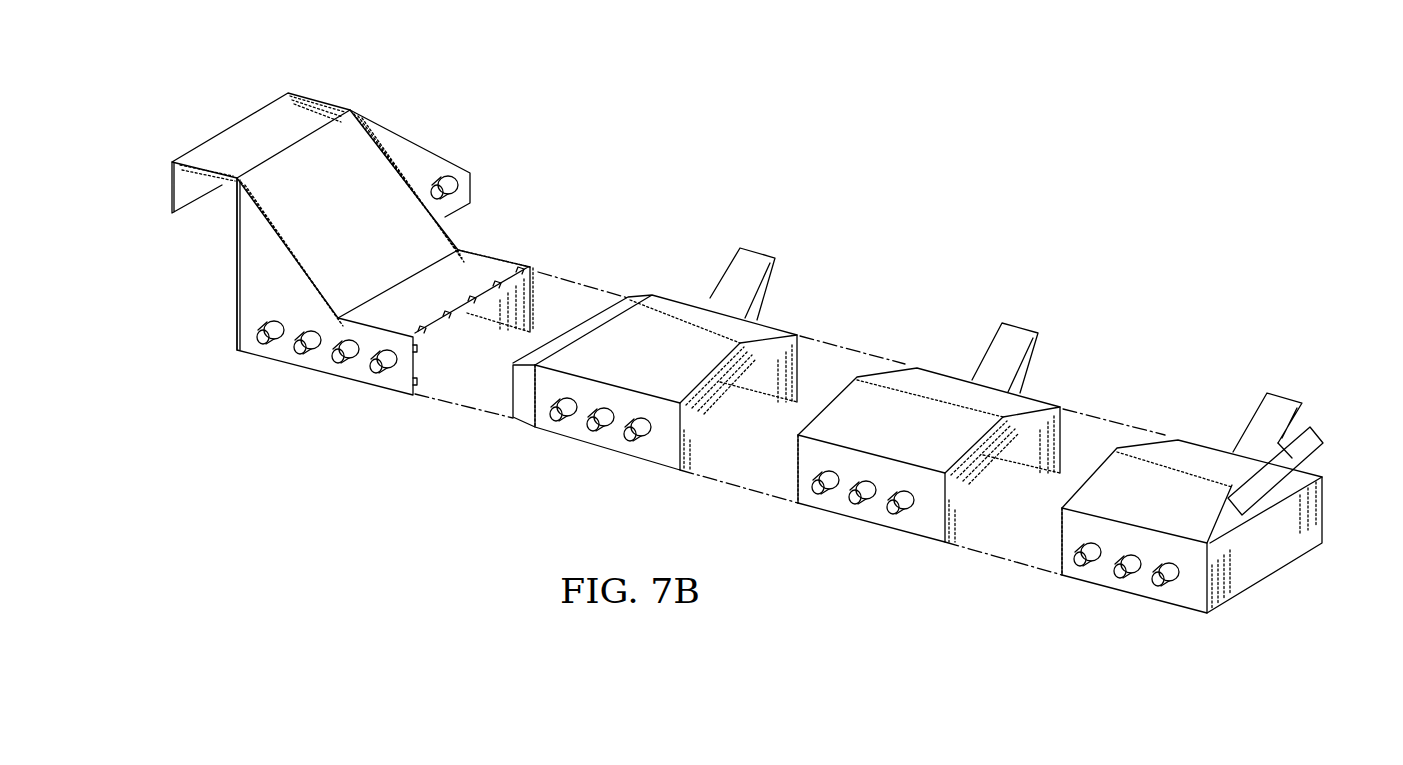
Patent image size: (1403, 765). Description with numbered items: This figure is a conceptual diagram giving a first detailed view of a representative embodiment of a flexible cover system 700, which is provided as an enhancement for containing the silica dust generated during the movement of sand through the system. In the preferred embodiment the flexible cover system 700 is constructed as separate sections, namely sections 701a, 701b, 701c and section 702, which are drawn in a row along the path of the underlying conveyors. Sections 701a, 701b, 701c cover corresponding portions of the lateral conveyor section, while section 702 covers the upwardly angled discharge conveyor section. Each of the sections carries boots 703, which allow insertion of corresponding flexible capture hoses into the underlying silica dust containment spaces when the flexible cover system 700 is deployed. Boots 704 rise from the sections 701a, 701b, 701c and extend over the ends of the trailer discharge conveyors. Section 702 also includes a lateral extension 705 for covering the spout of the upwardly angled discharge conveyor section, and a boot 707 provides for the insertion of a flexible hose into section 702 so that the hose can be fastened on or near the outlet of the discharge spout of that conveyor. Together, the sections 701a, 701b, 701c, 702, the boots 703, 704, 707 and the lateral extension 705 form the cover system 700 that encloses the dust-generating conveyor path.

The flexible cover system 700 is at (1010, 112).
The section 701a is at (1195, 455).
The section 701b is at (932, 380).
The section 701c is at (670, 308).
The section 702 is at (252, 128).
The boots 703 is at (352, 370).
The boots 704 is at (752, 265).
The lateral extension 705 is at (232, 305).
The boot 707 is at (432, 172).